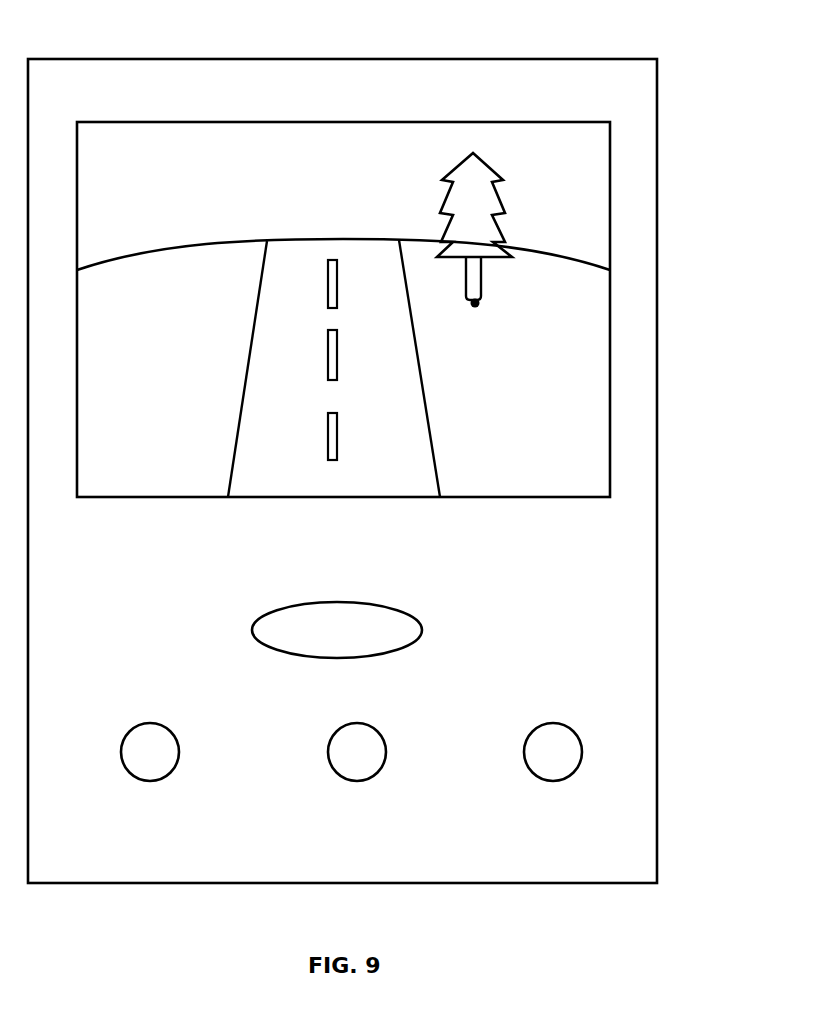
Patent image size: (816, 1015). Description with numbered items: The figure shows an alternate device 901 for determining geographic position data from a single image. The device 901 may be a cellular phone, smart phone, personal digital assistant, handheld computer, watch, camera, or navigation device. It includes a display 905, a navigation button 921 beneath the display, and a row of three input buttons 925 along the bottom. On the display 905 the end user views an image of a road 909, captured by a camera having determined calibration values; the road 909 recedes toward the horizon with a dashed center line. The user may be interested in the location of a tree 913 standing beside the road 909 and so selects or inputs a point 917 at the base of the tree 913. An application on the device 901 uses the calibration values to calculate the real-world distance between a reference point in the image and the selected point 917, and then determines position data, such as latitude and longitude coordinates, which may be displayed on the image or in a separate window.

The device 901 is at (528, 58).
The display 905 is at (534, 171).
The road 909 is at (310, 283).
The tree 913 is at (450, 172).
The point 917 is at (480, 303).
The navigation button 921 is at (370, 602).
The input buttons 925 is at (560, 782).